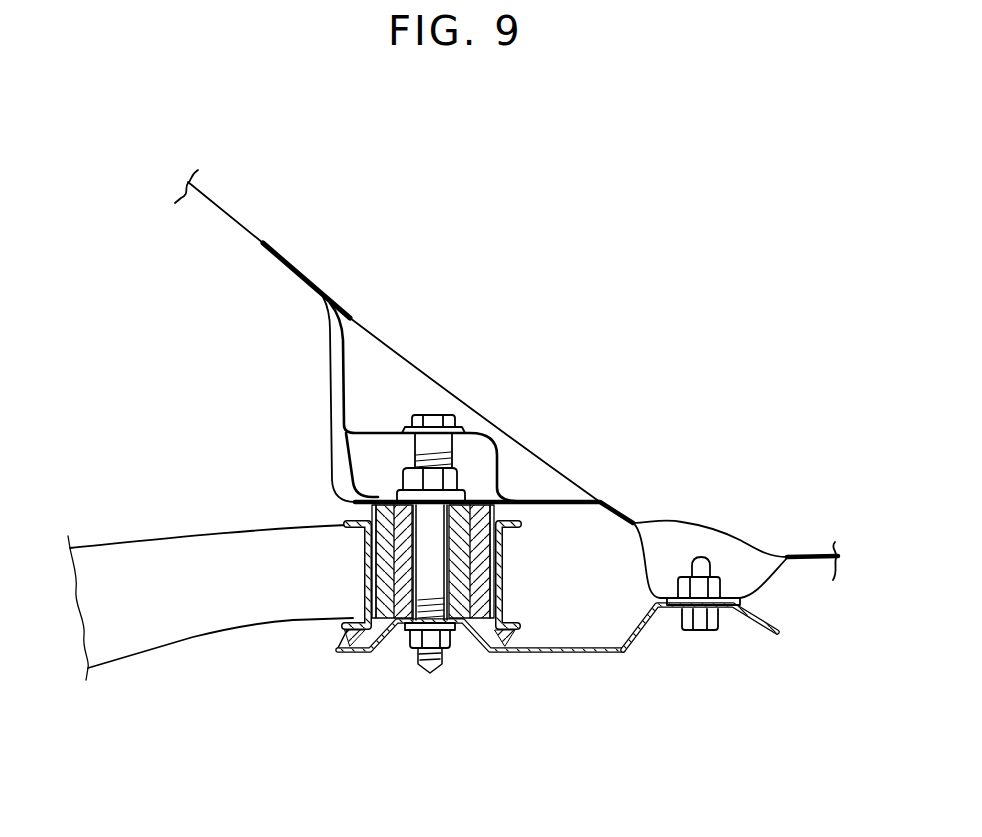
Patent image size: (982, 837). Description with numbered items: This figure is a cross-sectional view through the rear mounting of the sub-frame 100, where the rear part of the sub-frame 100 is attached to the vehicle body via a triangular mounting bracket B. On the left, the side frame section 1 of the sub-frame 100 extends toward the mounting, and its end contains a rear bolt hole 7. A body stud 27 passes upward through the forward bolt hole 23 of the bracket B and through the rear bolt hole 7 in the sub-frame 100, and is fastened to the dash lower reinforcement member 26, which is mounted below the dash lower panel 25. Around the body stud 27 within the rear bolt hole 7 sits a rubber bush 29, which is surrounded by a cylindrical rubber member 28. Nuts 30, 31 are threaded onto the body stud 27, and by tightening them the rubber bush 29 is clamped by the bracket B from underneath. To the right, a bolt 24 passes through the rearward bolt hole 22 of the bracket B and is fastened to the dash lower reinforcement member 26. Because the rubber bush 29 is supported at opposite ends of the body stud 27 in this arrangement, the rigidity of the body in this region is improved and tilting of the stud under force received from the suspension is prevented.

The sub-frame 100 is at (112, 520).
The side frame section 1 is at (195, 620).
The rear bolt hole 7 is at (358, 543).
The nut 30 is at (453, 490).
The rubber bush 29 is at (498, 552).
The cylindrical rubber member 28 is at (498, 580).
The body stud 27 is at (430, 672).
The forward bolt hole 23 is at (445, 638).
The nut 31 is at (415, 640).
The triangular mounting bracket B is at (568, 653).
The dash lower panel 25 is at (747, 541).
The dash lower reinforcement member 26 is at (770, 581).
The rearward bolt hole 22 is at (720, 628).
The bolt 24 is at (697, 631).